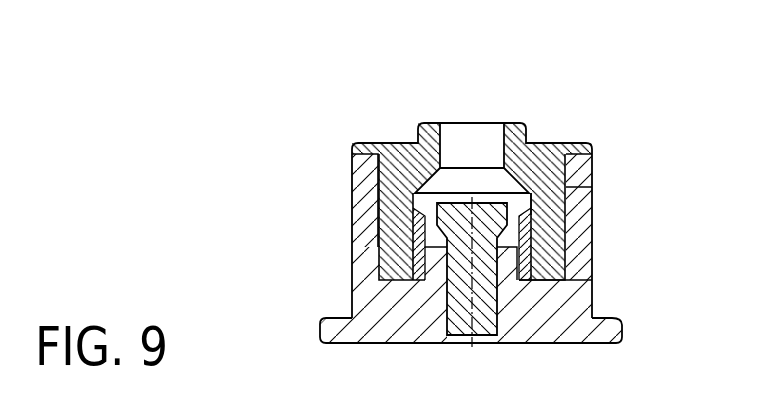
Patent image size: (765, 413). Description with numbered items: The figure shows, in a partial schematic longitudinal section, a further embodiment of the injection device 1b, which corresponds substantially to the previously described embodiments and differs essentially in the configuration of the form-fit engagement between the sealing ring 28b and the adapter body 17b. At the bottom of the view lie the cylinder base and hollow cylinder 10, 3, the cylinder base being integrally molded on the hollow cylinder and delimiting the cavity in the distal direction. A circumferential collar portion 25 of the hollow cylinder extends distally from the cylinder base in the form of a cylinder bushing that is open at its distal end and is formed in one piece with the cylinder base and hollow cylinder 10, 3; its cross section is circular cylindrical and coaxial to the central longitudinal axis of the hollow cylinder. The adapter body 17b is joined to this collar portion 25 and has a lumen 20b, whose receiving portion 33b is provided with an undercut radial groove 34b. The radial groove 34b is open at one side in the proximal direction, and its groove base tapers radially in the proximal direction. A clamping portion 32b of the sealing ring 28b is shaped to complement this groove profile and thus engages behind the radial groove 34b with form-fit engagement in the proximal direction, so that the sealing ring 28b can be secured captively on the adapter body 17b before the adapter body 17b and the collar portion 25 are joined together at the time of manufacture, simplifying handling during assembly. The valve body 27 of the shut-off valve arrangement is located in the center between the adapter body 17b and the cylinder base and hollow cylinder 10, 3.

The injection device 1b is at (331, 92).
The adapter body 17b is at (543, 150).
The lumen 20b is at (477, 122).
The receiving portion 33b is at (549, 198).
The radial groove 34b is at (549, 250).
The clamping portion 32b is at (547, 276).
The sealing ring 28b is at (356, 213).
The collar portion 25 is at (332, 228).
The valve body 27 is at (460, 281).
The housing wall 10, 3 is at (605, 306).